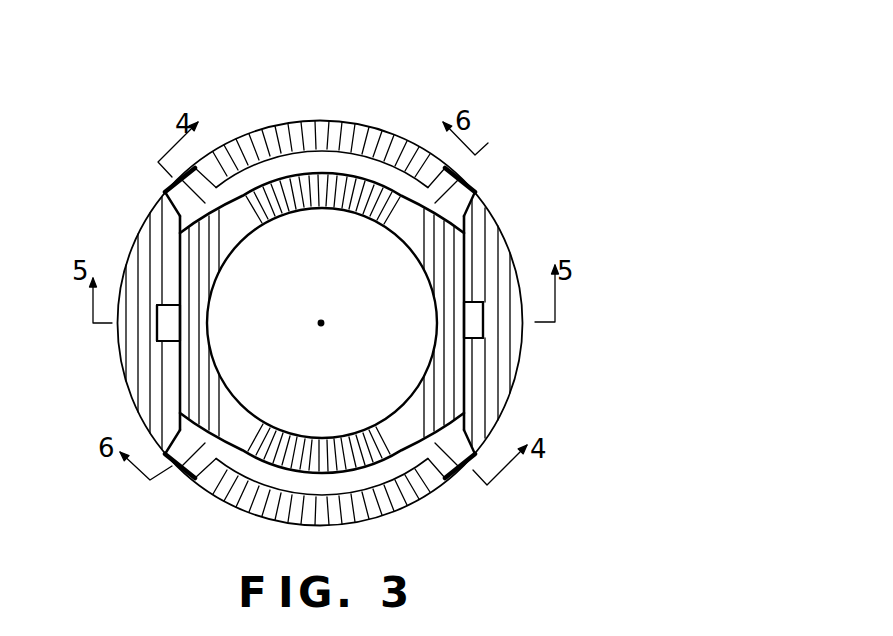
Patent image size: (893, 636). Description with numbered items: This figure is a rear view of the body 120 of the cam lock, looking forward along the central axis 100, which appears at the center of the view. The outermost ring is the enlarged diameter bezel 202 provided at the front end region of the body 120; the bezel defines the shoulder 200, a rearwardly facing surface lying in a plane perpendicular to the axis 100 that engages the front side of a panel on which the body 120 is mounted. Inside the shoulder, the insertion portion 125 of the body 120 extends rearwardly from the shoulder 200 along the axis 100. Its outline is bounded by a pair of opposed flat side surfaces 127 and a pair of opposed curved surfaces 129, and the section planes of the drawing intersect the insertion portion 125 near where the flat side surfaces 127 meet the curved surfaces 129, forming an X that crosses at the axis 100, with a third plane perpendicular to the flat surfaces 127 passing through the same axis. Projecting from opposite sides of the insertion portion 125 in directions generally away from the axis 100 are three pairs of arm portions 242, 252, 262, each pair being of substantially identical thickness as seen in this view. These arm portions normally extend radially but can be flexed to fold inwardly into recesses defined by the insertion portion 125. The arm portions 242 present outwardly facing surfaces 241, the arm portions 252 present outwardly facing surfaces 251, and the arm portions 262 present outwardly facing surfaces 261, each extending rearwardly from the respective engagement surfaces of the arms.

The central axis 100 is at (318, 319).
The body 120 is at (394, 94).
The insertion portion 125 is at (285, 478).
The flat side surfaces 127 is at (174, 368).
The curved surfaces 129 is at (290, 123).
The shoulder 200 is at (143, 267).
The bezel 202 is at (508, 228).
The outwardly facing surfaces 241 is at (172, 184).
The arm portions 242 is at (166, 192).
The outwardly facing surfaces 251 is at (158, 337).
The arm portions 252 is at (160, 341).
The outwardly facing surfaces 261 is at (470, 178).
The arm portions 262 is at (478, 190).